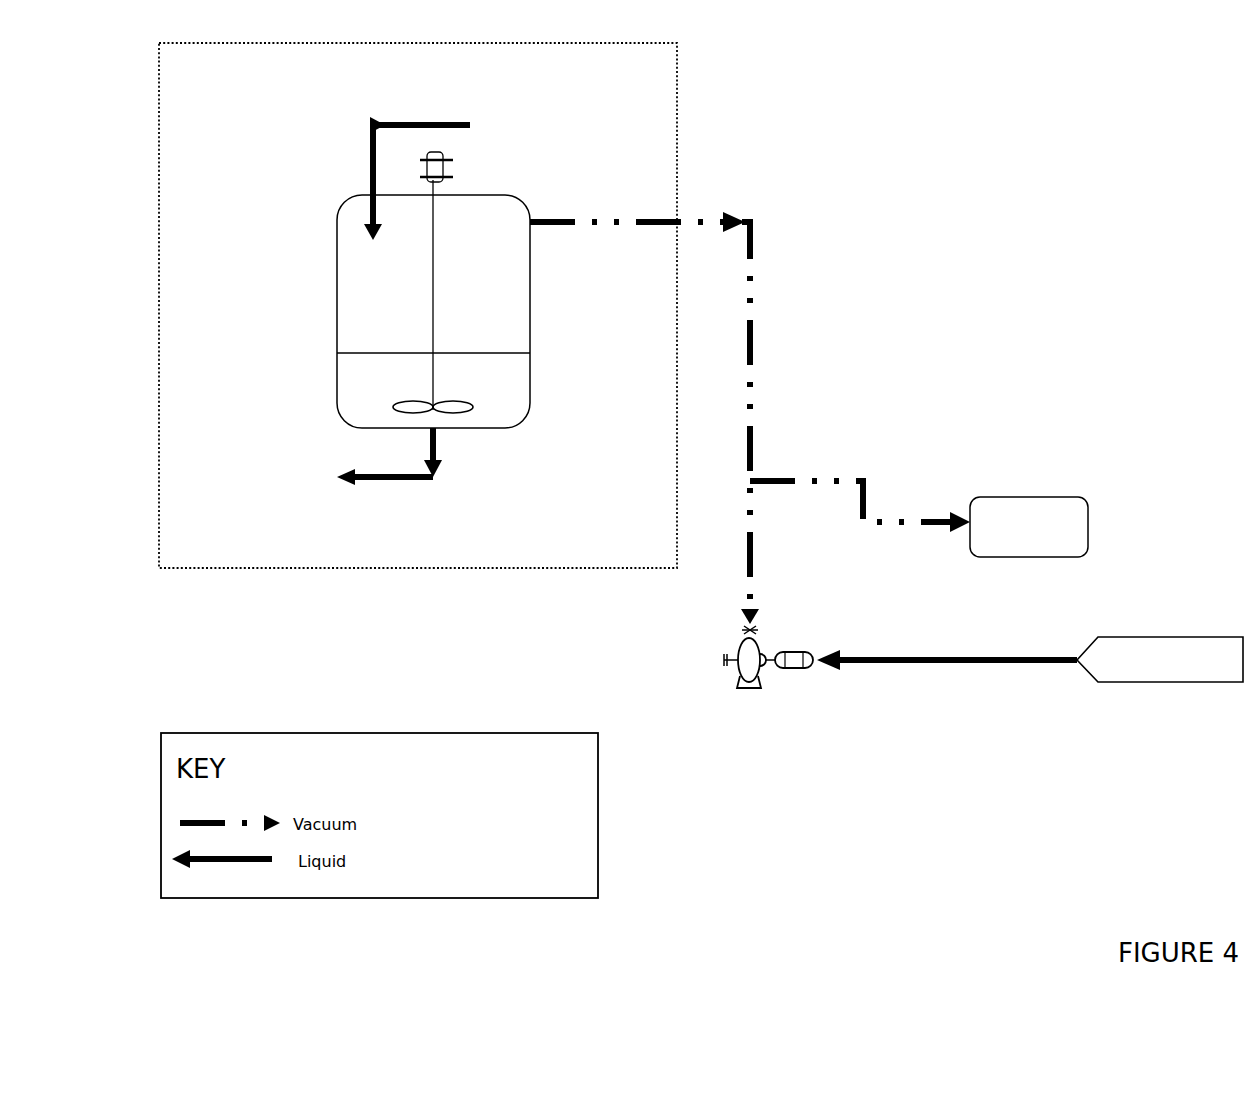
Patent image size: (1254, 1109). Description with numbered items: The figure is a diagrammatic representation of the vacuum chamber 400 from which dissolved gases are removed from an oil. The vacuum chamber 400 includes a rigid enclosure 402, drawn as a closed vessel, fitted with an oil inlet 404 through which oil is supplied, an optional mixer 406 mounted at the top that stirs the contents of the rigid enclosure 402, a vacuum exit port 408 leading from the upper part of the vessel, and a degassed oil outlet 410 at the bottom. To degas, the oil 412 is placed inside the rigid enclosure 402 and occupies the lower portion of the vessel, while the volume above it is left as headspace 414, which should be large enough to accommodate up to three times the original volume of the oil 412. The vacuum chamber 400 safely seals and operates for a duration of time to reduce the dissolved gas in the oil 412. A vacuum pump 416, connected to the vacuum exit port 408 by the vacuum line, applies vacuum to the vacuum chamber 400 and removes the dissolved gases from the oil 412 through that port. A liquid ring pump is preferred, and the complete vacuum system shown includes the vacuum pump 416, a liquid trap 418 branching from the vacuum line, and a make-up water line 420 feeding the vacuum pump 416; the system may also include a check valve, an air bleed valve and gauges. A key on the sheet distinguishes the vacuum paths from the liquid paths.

The vacuum chamber 400 is at (680, 148).
The rigid enclosure 402 is at (326, 324).
The oil inlet 404 is at (443, 178).
The mixer 406 is at (455, 162).
The vacuum exit port 408 is at (535, 231).
The degassed oil outlet 410 is at (365, 457).
The oil 412 is at (433, 370).
The headspace 414 is at (426, 296).
The vacuum pump 416 is at (708, 661).
The liquid trap 418 is at (1029, 527).
The make-up water line 420 is at (1030, 659).